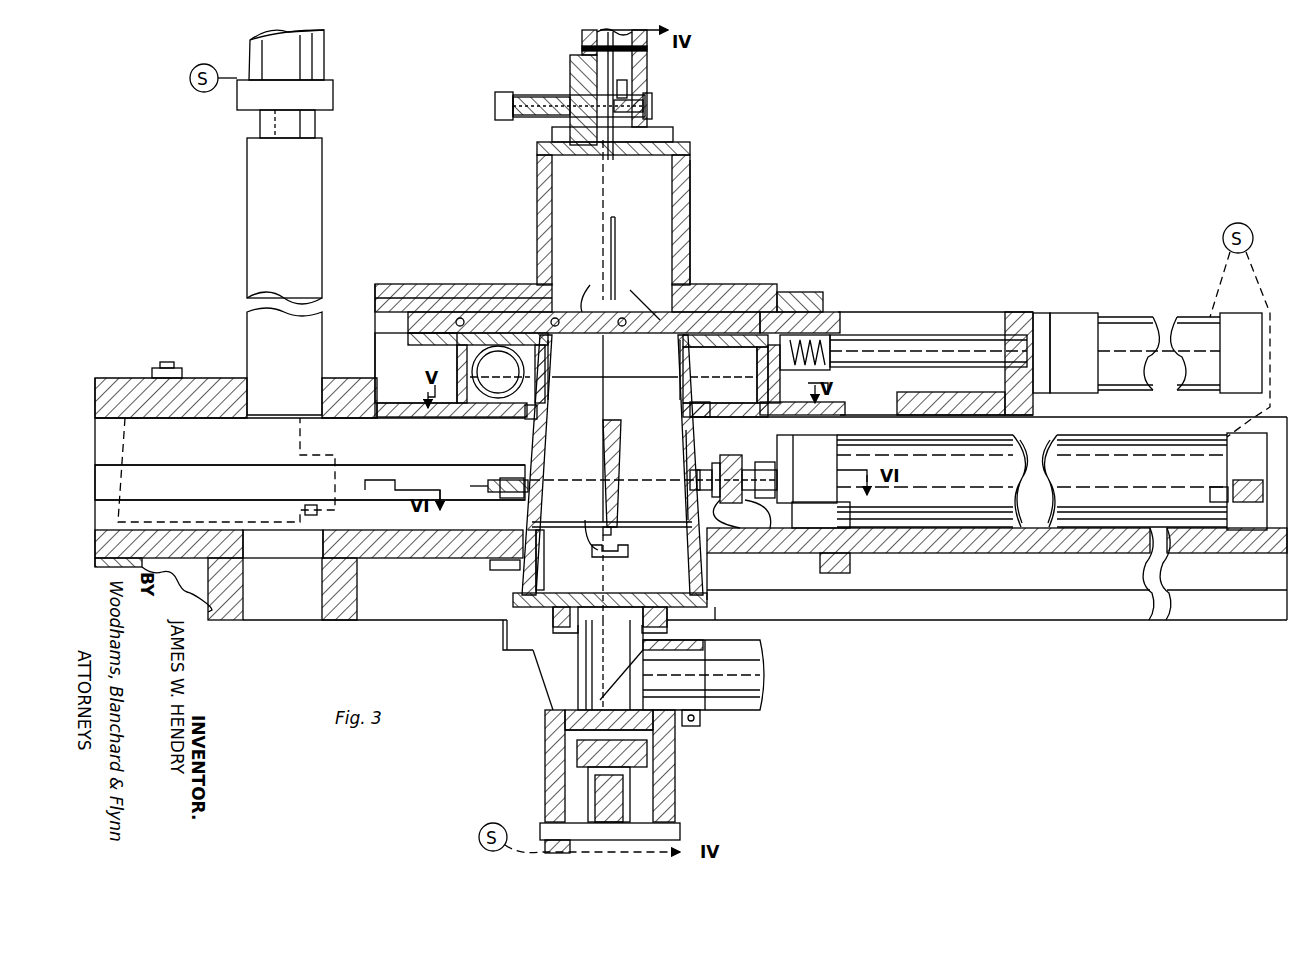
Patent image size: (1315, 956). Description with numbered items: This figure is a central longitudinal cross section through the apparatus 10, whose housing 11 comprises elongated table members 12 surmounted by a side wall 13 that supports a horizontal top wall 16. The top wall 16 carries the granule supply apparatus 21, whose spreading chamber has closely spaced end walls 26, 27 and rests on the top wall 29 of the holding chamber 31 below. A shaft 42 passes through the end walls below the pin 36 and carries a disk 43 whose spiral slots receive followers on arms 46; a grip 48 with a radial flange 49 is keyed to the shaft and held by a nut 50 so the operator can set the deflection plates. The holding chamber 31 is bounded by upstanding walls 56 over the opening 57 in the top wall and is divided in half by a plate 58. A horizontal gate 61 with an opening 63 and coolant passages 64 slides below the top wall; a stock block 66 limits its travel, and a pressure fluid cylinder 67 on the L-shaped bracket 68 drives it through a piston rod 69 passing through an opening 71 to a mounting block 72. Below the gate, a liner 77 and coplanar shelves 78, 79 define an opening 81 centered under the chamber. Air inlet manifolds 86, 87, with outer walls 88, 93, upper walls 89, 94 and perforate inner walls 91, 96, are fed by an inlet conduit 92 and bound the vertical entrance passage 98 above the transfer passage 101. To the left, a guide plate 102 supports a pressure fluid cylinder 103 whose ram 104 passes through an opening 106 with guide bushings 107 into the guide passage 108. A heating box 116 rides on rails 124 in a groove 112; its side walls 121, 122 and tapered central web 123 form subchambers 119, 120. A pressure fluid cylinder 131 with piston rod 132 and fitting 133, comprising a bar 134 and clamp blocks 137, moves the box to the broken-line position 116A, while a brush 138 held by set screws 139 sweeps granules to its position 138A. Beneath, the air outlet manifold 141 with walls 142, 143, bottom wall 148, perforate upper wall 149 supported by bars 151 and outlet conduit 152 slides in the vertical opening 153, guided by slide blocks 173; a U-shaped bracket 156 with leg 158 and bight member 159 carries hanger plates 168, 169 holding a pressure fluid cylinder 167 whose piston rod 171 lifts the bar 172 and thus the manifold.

The apparatus 10 is at (1098, 112).
The housing 11 is at (760, 278).
The table members 12 is at (1232, 612).
The side wall 13 is at (1288, 540).
The top wall 16 is at (777, 300).
The granule supply apparatus 21 is at (758, 134).
The end wall 26 is at (582, 36).
The end wall 27 is at (648, 70).
The top wall 29 is at (690, 148).
The holding chamber 31 is at (685, 200).
The pin 36 is at (582, 50).
The shaft 42 is at (653, 104).
The disk 43 is at (614, 148).
The arms 46 is at (628, 88).
The grip 48 is at (526, 119).
The radial flange 49 is at (570, 90).
The nut 50 is at (502, 92).
The upstanding walls 56 is at (690, 226).
The opening 57 is at (540, 275).
The plate 58 is at (615, 235).
The gate 61 is at (440, 288).
The opening 63 is at (505, 290).
The coolant passages 64 is at (590, 290).
The stock block 66 is at (825, 300).
The pressure fluid cylinder 67 is at (1110, 318).
The bracket 68 is at (1020, 312).
The piston rod 69 is at (922, 345).
The opening 71 is at (992, 370).
The mounting block 72 is at (832, 350).
The liner 77 is at (652, 408).
The shelf 78 is at (425, 418).
The shelf 79 is at (724, 417).
The opening 81 is at (546, 414).
The air inlet manifold 86 is at (440, 350).
The air inlet manifold 87 is at (748, 290).
The outer wall 88 is at (457, 362).
The upper wall 89 is at (545, 335).
The perforate inner wall 91 is at (548, 366).
The inlet conduit 92 is at (480, 362).
The outer wall 93 is at (757, 389).
The top wall 94 is at (732, 348).
The perforate inner wall 96 is at (680, 359).
The entrance passage 98 is at (656, 300).
The transfer passage 101 is at (372, 558).
The guide plate 102 is at (140, 378).
The pressure fluid cylinder 103 is at (322, 68).
The ram 104 is at (258, 190).
The opening 106 is at (252, 400).
The guide bushings 107 is at (230, 378).
The guide passage 108 is at (265, 620).
The groove 112 is at (378, 470).
The heating box 116 is at (500, 458).
The limiting position of heating box 116A is at (300, 452).
The subchamber 119 is at (572, 470).
The subchamber 120 is at (647, 470).
The side wall 121 is at (527, 425).
The side wall 122 is at (686, 456).
The central web 123 is at (606, 440).
The rail 124 is at (505, 502).
The pressure fluid cylinder 131 is at (1052, 481).
The piston rod 132 is at (775, 465).
The fitting 133 is at (780, 516).
The bar 134 is at (692, 492).
The clamp blocks 137 is at (750, 462).
The brush 138 is at (738, 548).
The leftwardmost position of brush 138A is at (333, 523).
The set screws 139 is at (766, 548).
The air outlet manifold 141 is at (505, 585).
The upstanding wall 142 is at (552, 565).
The upstanding wall 143 is at (712, 598).
The bottom wall 148 is at (535, 617).
The perforate upper wall 149 is at (590, 525).
The horizontal bars 151 is at (630, 548).
The outlet conduit 152 is at (720, 712).
The vertical opening 153 is at (518, 566).
The bracket 156 is at (528, 706).
The leg 158 is at (552, 670).
The bight member 159 is at (548, 726).
The pressure fluid cylinder 167 is at (655, 835).
The hanger plate 168 is at (545, 780).
The hanger plate 169 is at (672, 778).
The piston rod 171 is at (631, 810).
The bar 172 is at (648, 756).
The slide block 173 is at (612, 560).